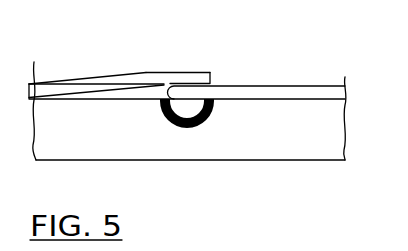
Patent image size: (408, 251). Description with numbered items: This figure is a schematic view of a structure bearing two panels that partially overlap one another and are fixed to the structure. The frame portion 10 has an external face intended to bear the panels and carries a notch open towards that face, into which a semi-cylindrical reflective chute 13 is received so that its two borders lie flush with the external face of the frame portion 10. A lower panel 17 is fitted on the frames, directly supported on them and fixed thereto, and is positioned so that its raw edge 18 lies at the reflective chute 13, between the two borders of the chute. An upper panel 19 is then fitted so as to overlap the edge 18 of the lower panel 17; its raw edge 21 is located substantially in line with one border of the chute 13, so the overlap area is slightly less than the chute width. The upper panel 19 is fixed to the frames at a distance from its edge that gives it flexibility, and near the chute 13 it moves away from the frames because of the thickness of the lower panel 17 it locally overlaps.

The frame portion 10 is at (63, 130).
The reflective chute 13 is at (207, 120).
The lower panel 17 is at (292, 84).
The edge 18 is at (168, 93).
The upper panel 19 is at (97, 87).
The raw edge 21 is at (208, 72).